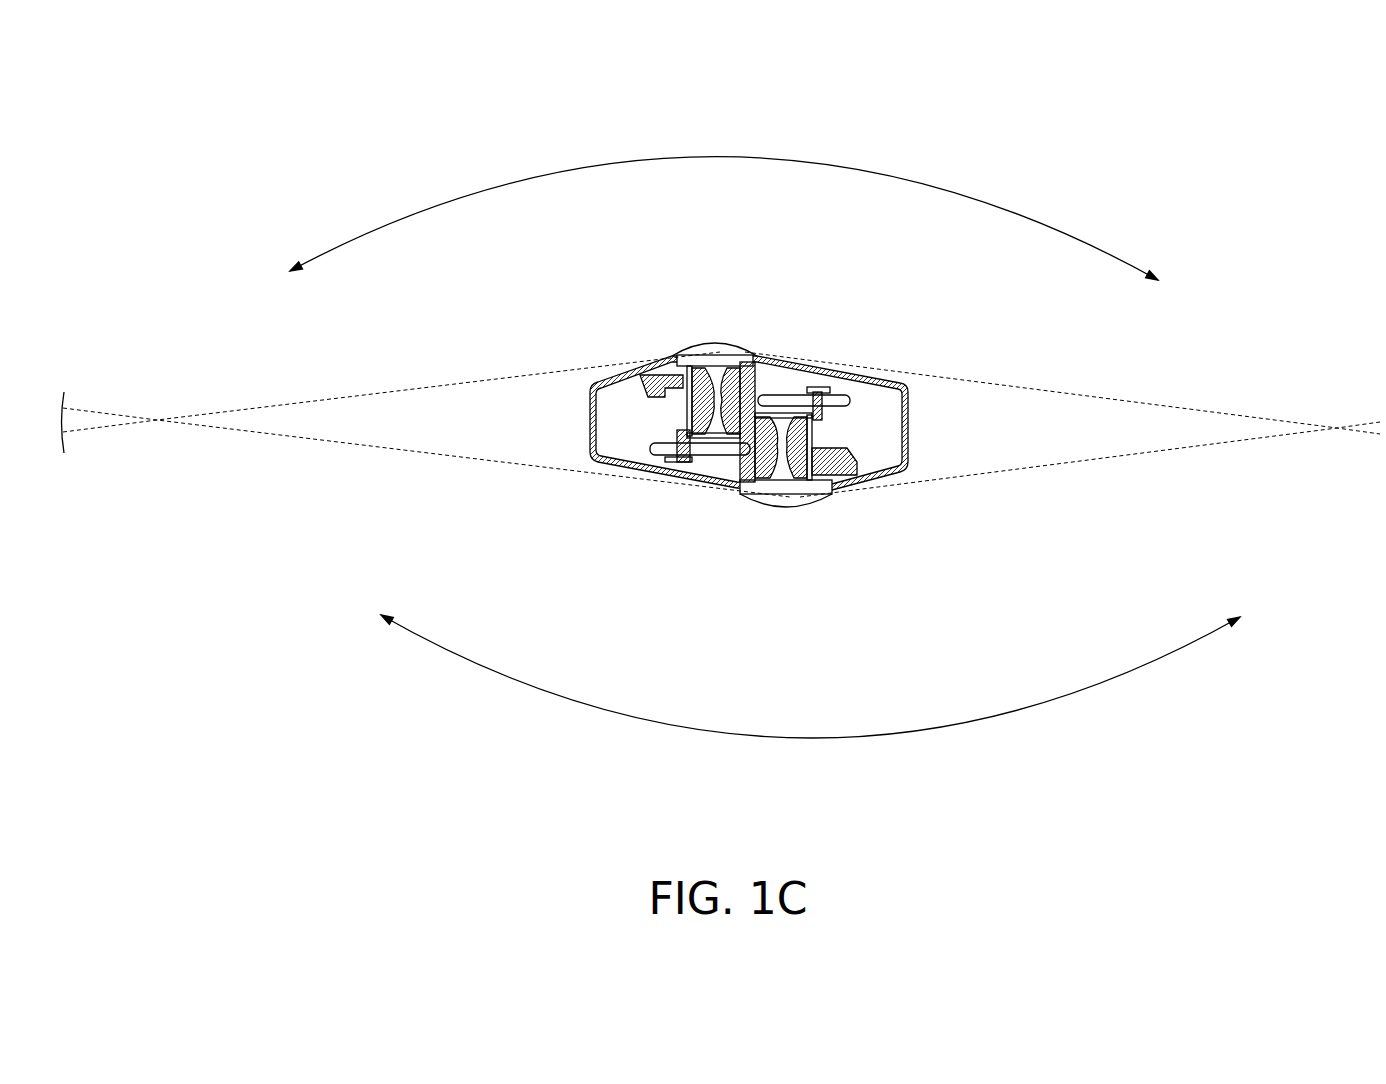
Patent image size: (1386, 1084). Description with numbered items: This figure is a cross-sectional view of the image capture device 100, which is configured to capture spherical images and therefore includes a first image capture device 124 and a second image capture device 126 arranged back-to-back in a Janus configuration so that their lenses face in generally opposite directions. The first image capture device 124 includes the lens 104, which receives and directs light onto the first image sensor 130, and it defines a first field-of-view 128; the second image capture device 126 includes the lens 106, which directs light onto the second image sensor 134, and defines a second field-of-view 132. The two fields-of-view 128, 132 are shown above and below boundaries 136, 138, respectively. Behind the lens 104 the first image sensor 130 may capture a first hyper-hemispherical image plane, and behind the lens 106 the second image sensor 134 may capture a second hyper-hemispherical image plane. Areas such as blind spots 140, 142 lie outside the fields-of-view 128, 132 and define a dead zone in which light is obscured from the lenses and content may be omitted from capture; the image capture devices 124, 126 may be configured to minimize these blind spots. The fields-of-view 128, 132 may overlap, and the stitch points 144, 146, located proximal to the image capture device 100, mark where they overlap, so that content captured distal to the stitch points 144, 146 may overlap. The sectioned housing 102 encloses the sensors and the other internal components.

The image capture device 100 is at (901, 421).
The housing 102 is at (576, 438).
The lens 104 is at (718, 345).
The lens 106 is at (790, 505).
The first image capture device 124 is at (755, 325).
The second image capture device 126 is at (818, 518).
The first field-of-view 128 is at (800, 157).
The first image sensor 130 is at (715, 448).
The second field-of-view 132 is at (765, 738).
The second image sensor 134 is at (800, 395).
The boundary 136 is at (375, 392).
The boundary 138 is at (427, 458).
The blind spot 140 is at (497, 412).
The blind spot 142 is at (965, 400).
The stitch point 144 is at (155, 422).
The stitch point 146 is at (1337, 430).